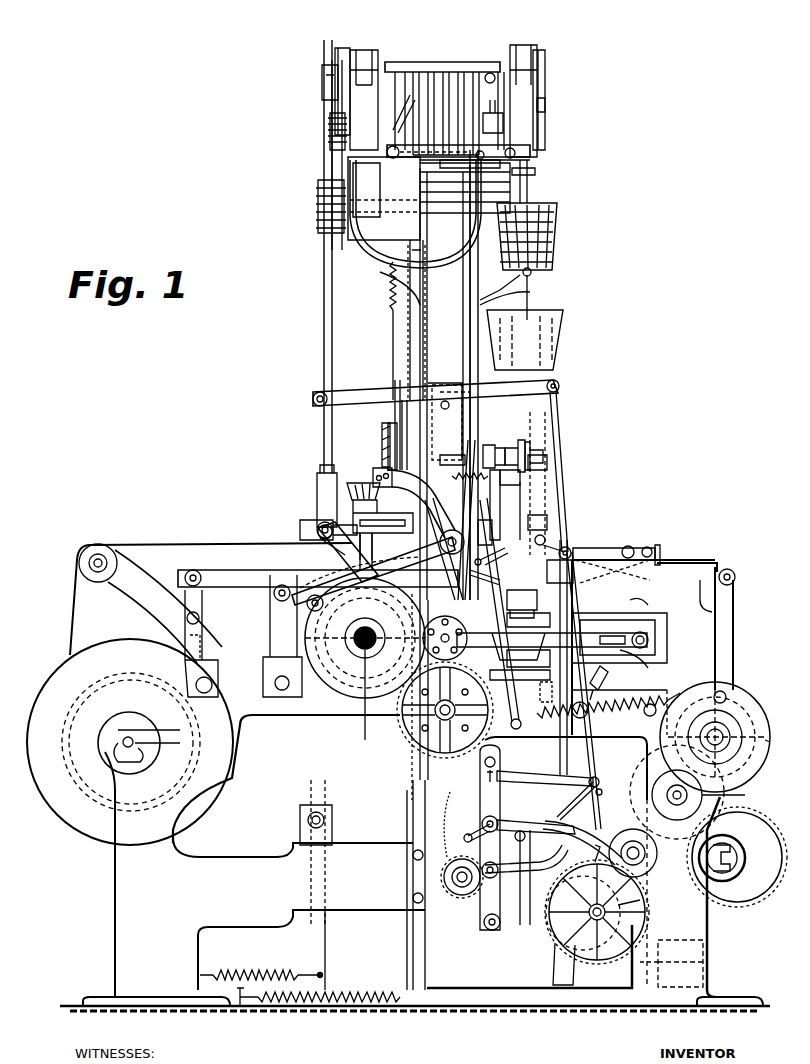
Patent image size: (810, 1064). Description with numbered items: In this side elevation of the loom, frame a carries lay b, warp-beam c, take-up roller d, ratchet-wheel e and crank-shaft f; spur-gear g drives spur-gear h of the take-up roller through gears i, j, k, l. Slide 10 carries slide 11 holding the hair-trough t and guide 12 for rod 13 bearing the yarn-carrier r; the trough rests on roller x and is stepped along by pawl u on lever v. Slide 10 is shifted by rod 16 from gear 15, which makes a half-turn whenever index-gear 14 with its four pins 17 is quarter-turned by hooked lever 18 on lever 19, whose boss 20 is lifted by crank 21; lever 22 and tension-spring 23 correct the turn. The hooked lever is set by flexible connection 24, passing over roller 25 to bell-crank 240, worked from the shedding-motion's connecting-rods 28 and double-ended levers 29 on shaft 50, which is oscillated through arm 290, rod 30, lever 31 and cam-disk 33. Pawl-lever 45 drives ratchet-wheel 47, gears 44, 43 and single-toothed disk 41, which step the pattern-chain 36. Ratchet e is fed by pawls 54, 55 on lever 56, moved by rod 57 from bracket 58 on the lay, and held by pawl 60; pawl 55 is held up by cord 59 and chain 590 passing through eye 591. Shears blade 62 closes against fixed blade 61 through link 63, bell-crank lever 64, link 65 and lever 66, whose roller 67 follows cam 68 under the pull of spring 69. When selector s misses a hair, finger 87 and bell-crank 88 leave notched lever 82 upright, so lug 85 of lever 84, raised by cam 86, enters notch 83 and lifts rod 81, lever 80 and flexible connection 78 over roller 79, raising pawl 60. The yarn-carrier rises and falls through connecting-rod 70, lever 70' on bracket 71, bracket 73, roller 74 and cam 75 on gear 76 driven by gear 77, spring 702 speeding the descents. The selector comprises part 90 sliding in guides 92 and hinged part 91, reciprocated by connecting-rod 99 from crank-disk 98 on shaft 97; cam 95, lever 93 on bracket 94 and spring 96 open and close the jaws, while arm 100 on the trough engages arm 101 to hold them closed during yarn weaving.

The connecting-rods 28 is at (370, 50).
The double-ended levers 29 is at (345, 68).
The bell-crank 240 is at (395, 125).
The arm 290 is at (320, 66).
The gear 44 is at (330, 124).
The gear 43 is at (320, 228).
The pawl-lever 45 is at (505, 122).
The shaft 50 is at (546, 103).
The lever 80 is at (515, 148).
The ratchet-wheel 47 is at (535, 180).
The roller 25 is at (390, 190).
The disk 41 is at (398, 242).
The frame a is at (372, 262).
The flexible connection 78 is at (469, 291).
The rod 81 is at (527, 312).
The rod 30 is at (323, 314).
The pattern-chain 36 is at (392, 316).
The flexible connection 24 is at (392, 338).
The lever 70' is at (575, 379).
The bracket 71 is at (330, 412).
The bracket 73 is at (395, 435).
The roller 74 is at (383, 450).
The cam 75 is at (388, 465).
The gear 76 is at (370, 490).
The spring 702 is at (445, 421).
The shaft 97 is at (448, 455).
The spring 96 is at (460, 472).
The cam 95 is at (490, 445).
The crank-disk 98 is at (514, 446).
The connecting-rod 99 is at (524, 440).
The guides 92 is at (548, 462).
The connecting-rod 70 is at (573, 471).
The part 90 is at (521, 478).
The lever 82 is at (522, 510).
The selector s is at (545, 536).
The arm 100 is at (548, 540).
The yarn-carrier r is at (572, 548).
The part 91 is at (509, 505).
The lever 93 is at (467, 480).
The arm 101 is at (484, 531).
The blade 61 is at (632, 546).
The blade 62 is at (660, 548).
The link 63 is at (640, 580).
The rod 13 is at (566, 585).
The guide 12 is at (580, 612).
The lever v is at (650, 606).
The slide 10 is at (650, 645).
The chain 590 is at (650, 668).
The eye 591 is at (620, 685).
The rod 16 is at (590, 680).
The trough t is at (527, 604).
The notch 83 is at (508, 602).
The finger 87 is at (486, 580).
The bell-crank 88 is at (491, 560).
The slide 11 is at (520, 641).
The pawl u is at (546, 691).
The lug 85 is at (365, 628).
The crank-shaft f is at (357, 706).
The index-wheel 14 is at (412, 720).
The crank 21 is at (345, 650).
The gear 15 is at (466, 650).
The pins 17 is at (442, 766).
The lever 18 is at (514, 728).
The take-up roller d is at (760, 722).
The spur-gear h is at (771, 742).
The gear i is at (745, 793).
The gear j is at (722, 797).
The gear k is at (660, 855).
The gear l is at (625, 890).
The ratchet-wheel e is at (583, 929).
The spur-gear g is at (625, 905).
The lay b is at (556, 955).
The bell-crank lever 64 is at (705, 960).
The cord 59 is at (598, 778).
The bracket 58 is at (561, 800).
The rod 57 is at (513, 820).
The pawl 55 is at (525, 822).
The lever 56 is at (480, 810).
The pawl 60 is at (518, 870).
The pawl 54 is at (527, 882).
The roller 79 is at (463, 898).
The lever 22 is at (410, 828).
The lever 66 is at (325, 945).
The spring 69 is at (258, 970).
The tension-spring 23 is at (295, 1008).
The link 65 is at (500, 1008).
The warp-beam c is at (42, 787).
The roller x is at (186, 617).
The lever 84 is at (238, 568).
The cam 86 is at (285, 625).
The cam 68 is at (290, 570).
The roller 67 is at (307, 603).
The lever 19 is at (318, 530).
The cam-disk 33 is at (300, 525).
The lever 31 is at (316, 520).
The gear 77 is at (318, 480).
The boss 20 is at (405, 565).
The bracket 94 is at (425, 485).